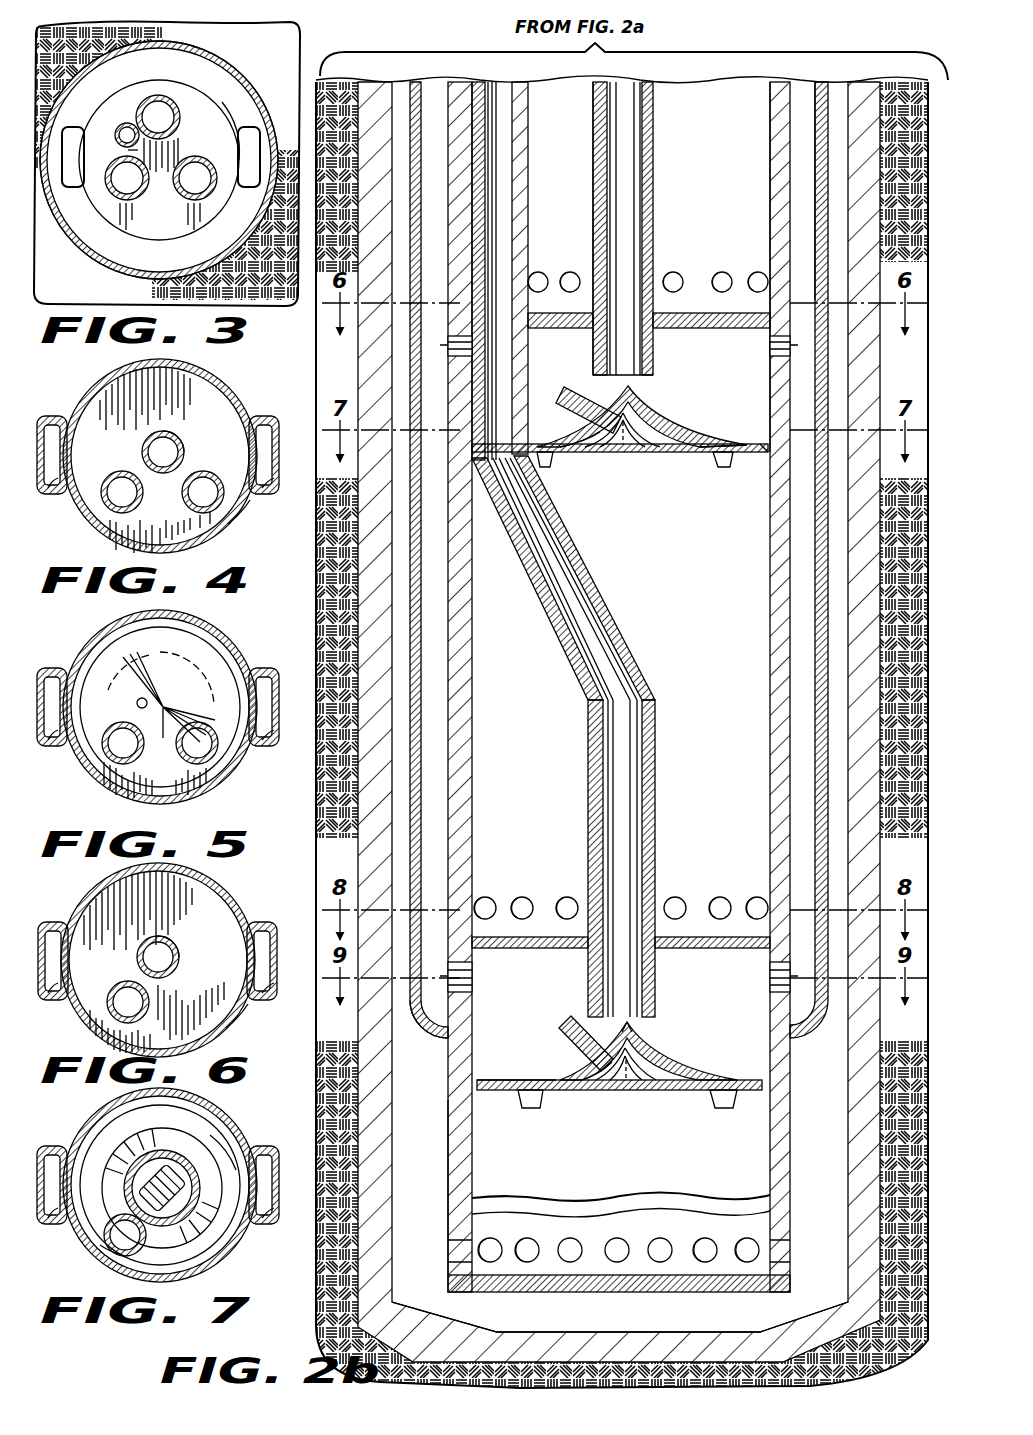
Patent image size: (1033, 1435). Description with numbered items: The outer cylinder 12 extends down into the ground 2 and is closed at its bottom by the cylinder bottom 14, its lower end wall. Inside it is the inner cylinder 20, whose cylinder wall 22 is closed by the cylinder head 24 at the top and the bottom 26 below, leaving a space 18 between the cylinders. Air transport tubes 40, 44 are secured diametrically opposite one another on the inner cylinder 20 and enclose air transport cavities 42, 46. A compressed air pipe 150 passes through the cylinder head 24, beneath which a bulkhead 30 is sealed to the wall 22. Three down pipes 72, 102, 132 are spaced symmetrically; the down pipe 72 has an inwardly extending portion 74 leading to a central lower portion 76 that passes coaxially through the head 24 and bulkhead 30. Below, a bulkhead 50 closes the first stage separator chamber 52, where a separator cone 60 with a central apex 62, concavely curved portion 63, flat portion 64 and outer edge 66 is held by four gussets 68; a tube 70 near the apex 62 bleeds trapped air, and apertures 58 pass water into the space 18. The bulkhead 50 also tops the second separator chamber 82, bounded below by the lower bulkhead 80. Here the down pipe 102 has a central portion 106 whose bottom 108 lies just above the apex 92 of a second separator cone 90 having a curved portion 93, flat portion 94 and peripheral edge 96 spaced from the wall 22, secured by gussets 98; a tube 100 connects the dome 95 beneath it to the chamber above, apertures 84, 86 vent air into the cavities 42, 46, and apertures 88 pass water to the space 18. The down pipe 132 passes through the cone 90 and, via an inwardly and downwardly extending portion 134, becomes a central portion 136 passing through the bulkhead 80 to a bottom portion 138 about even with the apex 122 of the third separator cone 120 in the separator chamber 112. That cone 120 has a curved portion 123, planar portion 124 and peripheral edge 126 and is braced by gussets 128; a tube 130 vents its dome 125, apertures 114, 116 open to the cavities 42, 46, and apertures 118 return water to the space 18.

In FIG. 3, the ground 2 is at (286, 50).
In FIG. 2B, the outer cylinder 12 is at (374, 88).
In FIG. 3, the outer cylinder 12 is at (106, 46).
In FIG. 2B, the cylinder bottom 14 is at (622, 1342).
In FIG. 2B, the space 18 is at (398, 102).
In FIG. 3, the space 18 is at (100, 240).
In FIG. 2B, the inner cylinder 20 is at (768, 652).
In FIG. 3, the inner cylinder 20 is at (158, 74).
In FIG. 4, the inner cylinder 20 is at (100, 380).
In FIG. 5, the inner cylinder 20 is at (222, 630).
In FIG. 6, the inner cylinder 20 is at (90, 896).
In FIG. 7, the inner cylinder 20 is at (96, 1110).
In FIG. 2B, the cylinder wall 22 is at (448, 1168).
In FIG. 4, the cylinder wall 22 is at (218, 527).
In FIG. 5, the cylinder wall 22 is at (128, 622).
In FIG. 6, the cylinder wall 22 is at (228, 1022).
In FIG. 7, the cylinder wall 22 is at (228, 1250).
In FIG. 3, the cylinder head 24 is at (222, 102).
In FIG. 2B, the bottom 26 is at (590, 1292).
In FIG. 4, the bulkhead 30 is at (215, 395).
In FIG. 2B, the air transport tube 40 is at (802, 1040).
In FIG. 3, the air transport tube 40 is at (250, 126).
In FIG. 4, the air transport tube 40 is at (265, 416).
In FIG. 5, the air transport tube 40 is at (266, 670).
In FIG. 6, the air transport tube 40 is at (280, 916).
In FIG. 7, the air transport tube 40 is at (268, 1150).
In FIG. 2B, the air transport cavity 42 is at (806, 108).
In FIG. 4, the air transport cavity 42 is at (268, 488).
In FIG. 5, the air transport cavity 42 is at (268, 746).
In FIG. 6, the air transport cavity 42 is at (268, 980).
In FIG. 7, the air transport cavity 42 is at (268, 1218).
In FIG. 2B, the air transport tube 44 is at (425, 1034).
In FIG. 3, the air transport tube 44 is at (68, 190).
In FIG. 4, the air transport tube 44 is at (50, 416).
In FIG. 5, the air transport tube 44 is at (50, 670).
In FIG. 6, the air transport tube 44 is at (50, 924).
In FIG. 7, the air transport tube 44 is at (50, 1150).
In FIG. 2B, the air cavity 46 is at (425, 806).
In FIG. 4, the air cavity 46 is at (55, 490).
In FIG. 5, the air cavity 46 is at (50, 746).
In FIG. 6, the air cavity 46 is at (52, 1000).
In FIG. 7, the air cavity 46 is at (52, 1218).
In FIG. 2B, the bulkhead 50 is at (720, 320).
In FIG. 6, the bulkhead 50 is at (210, 920).
In FIG. 2B, the chamber 52 is at (702, 110).
In FIG. 2B, the apertures 58 is at (685, 275).
In FIG. 5, the separator cone 60 is at (170, 775).
In FIG. 5, the central apex 62 is at (170, 700).
In FIG. 5, the concavely curved portion 63 is at (205, 665).
In FIG. 5, the flat outer portion 64 is at (100, 665).
In FIG. 5, the outer edge 66 is at (112, 788).
In FIG. 5, the gussets 68 is at (215, 788).
In FIG. 5, the tube 70 is at (140, 698).
In FIG. 3, the down pipe 72 is at (175, 112).
In FIG. 4, the down pipe 72 is at (152, 436).
In FIG. 3, the inwardly extending portion 74 is at (128, 150).
In FIG. 4, the centrally disposed lower portion 76 is at (178, 434).
In FIG. 2B, the lower bulkhead 80 is at (698, 948).
In FIG. 2B, the chamber 82 is at (727, 552).
In FIG. 7, the chamber 82 is at (190, 1248).
In FIG. 2B, the aperture 84 is at (778, 346).
In FIG. 2B, the aperture 86 is at (458, 346).
In FIG. 2B, the apertures 88 is at (566, 900).
In FIG. 2B, the separator cone 90 is at (690, 422).
In FIG. 7, the separator cone 90 is at (215, 1160).
In FIG. 2B, the central apex 92 is at (632, 412).
In FIG. 2B, the concavely curved portion 93 is at (578, 428).
In FIG. 2B, the flat outwardly extending portion 94 is at (740, 442).
In FIG. 2B, the dome 95 is at (622, 444).
In FIG. 2B, the peripheral edge 96 is at (768, 455).
In FIG. 7, the peripheral edge 96 is at (218, 1135).
In FIG. 2B, the gussets 98 is at (556, 462).
In FIG. 7, the gussets 98 is at (100, 1245).
In FIG. 2B, the tube 100 is at (585, 384).
In FIG. 2B, the down pipe 102 is at (594, 72).
In FIG. 3, the down pipe 102 is at (200, 156).
In FIG. 4, the down pipe 102 is at (203, 471).
In FIG. 5, the down pipe 102 is at (205, 722).
In FIG. 6, the down pipe 102 is at (164, 936).
In FIG. 2B, the central portion 106 is at (650, 180).
In FIG. 6, the central portion 106 is at (180, 962).
In FIG. 2B, the bottom 108 is at (648, 392).
In FIG. 2B, the separator chamber 112 is at (748, 1160).
In FIG. 2B, the aperture 114 is at (770, 978).
In FIG. 2B, the aperture 116 is at (472, 970).
In FIG. 2B, the apertures 118 is at (746, 1245).
In FIG. 2B, the separator cone 120 is at (688, 1070).
In FIG. 2B, the central apex 122 is at (645, 1030).
In FIG. 2B, the curved portion 123 is at (575, 1076).
In FIG. 2B, the flat outer planar portion 124 is at (500, 1080).
In FIG. 2B, the dome 125 is at (630, 1078).
In FIG. 2B, the outer peripheral edge 126 is at (474, 1082).
In FIG. 2B, the gussets 128 is at (728, 1100).
In FIG. 2B, the tube 130 is at (556, 1022).
In FIG. 2B, the down pipe 132 is at (505, 92).
In FIG. 3, the down pipe 132 is at (137, 200).
In FIG. 4, the down pipe 132 is at (108, 473).
In FIG. 5, the down pipe 132 is at (108, 726).
In FIG. 6, the down pipe 132 is at (115, 984).
In FIG. 7, the down pipe 132 is at (110, 1226).
In FIG. 2B, the inwardly and downwardly extending portion 134 is at (616, 622).
In FIG. 7, the inwardly and downwardly extending portion 134 is at (130, 1185).
In FIG. 2B, the central portion 136 is at (656, 810).
In FIG. 2B, the bottom portion 138 is at (632, 1025).
In FIG. 3, the compressed air pipe 150 is at (122, 126).